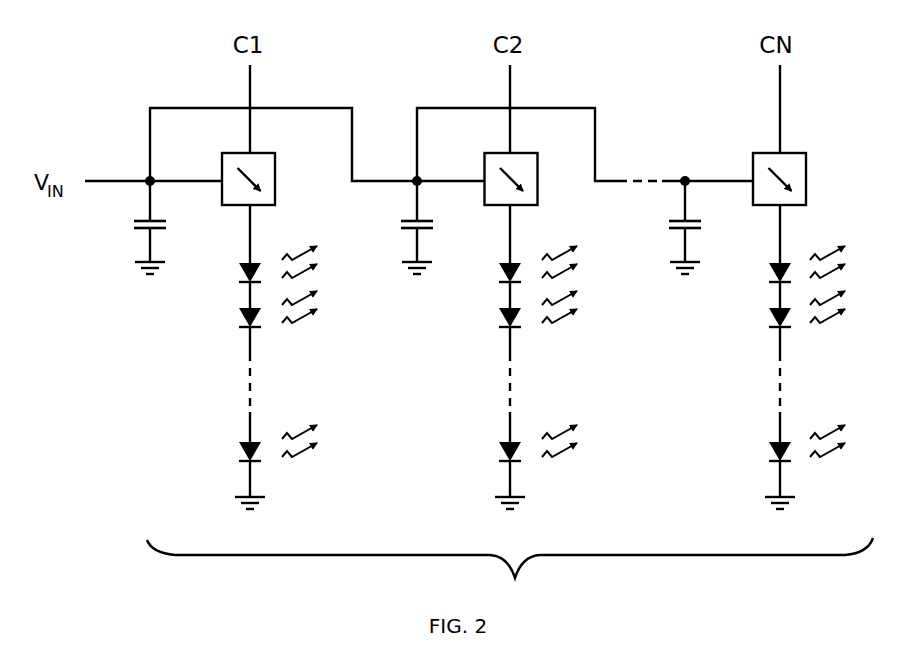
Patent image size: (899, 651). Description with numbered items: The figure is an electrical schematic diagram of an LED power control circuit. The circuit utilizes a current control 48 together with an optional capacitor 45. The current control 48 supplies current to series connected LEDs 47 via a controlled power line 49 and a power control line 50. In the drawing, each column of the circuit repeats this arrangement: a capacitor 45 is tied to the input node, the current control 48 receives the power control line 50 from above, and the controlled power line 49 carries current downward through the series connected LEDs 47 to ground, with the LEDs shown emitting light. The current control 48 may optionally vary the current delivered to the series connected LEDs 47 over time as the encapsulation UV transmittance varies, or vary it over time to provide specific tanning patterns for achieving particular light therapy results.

The capacitor 45 is at (125, 230).
The series connected LEDs 47 is at (236, 441).
The current control 48 is at (228, 206).
The controlled power line 49 is at (508, 233).
The power control line 50 is at (252, 84).